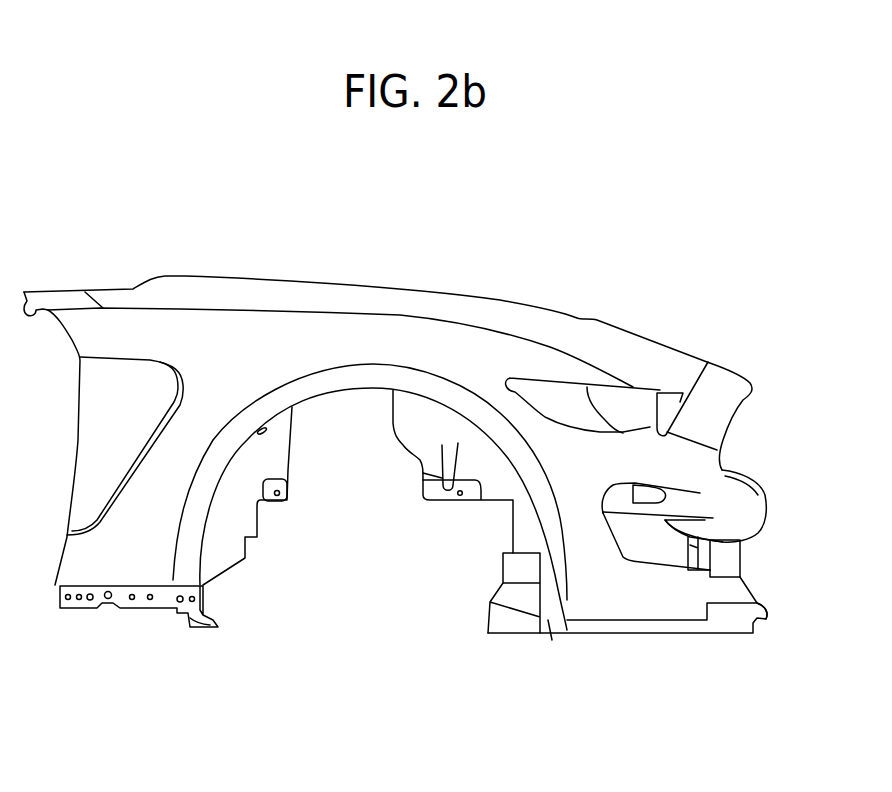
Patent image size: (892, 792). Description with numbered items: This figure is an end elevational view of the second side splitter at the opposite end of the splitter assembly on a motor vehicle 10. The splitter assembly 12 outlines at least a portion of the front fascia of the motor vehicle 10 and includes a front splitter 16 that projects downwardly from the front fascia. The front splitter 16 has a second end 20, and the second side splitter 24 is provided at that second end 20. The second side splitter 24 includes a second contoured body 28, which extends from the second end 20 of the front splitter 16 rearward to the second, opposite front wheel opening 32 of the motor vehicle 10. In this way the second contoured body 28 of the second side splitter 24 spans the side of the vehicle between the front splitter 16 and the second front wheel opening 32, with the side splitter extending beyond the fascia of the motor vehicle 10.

The motor vehicle 10 is at (250, 242).
The splitter assembly 12 is at (717, 682).
The front splitter 16 is at (763, 620).
The second end 20 is at (577, 627).
The second side splitter 24 is at (527, 647).
The second contoured body 28 is at (548, 623).
The second front wheel opening 32 is at (517, 468).